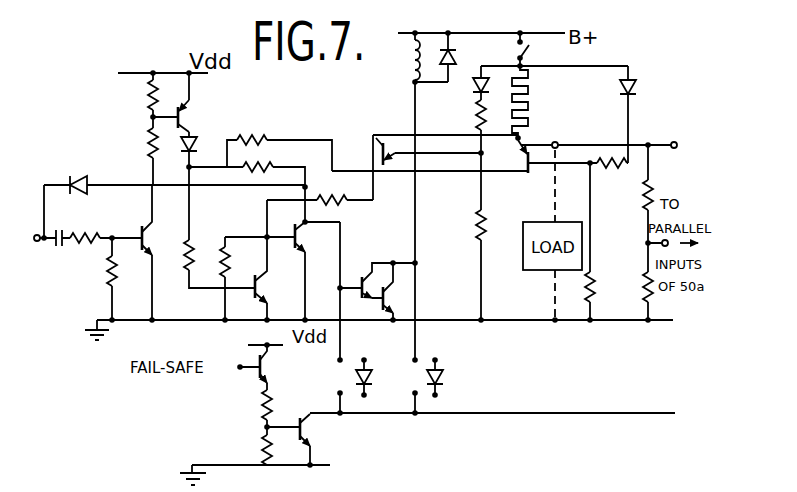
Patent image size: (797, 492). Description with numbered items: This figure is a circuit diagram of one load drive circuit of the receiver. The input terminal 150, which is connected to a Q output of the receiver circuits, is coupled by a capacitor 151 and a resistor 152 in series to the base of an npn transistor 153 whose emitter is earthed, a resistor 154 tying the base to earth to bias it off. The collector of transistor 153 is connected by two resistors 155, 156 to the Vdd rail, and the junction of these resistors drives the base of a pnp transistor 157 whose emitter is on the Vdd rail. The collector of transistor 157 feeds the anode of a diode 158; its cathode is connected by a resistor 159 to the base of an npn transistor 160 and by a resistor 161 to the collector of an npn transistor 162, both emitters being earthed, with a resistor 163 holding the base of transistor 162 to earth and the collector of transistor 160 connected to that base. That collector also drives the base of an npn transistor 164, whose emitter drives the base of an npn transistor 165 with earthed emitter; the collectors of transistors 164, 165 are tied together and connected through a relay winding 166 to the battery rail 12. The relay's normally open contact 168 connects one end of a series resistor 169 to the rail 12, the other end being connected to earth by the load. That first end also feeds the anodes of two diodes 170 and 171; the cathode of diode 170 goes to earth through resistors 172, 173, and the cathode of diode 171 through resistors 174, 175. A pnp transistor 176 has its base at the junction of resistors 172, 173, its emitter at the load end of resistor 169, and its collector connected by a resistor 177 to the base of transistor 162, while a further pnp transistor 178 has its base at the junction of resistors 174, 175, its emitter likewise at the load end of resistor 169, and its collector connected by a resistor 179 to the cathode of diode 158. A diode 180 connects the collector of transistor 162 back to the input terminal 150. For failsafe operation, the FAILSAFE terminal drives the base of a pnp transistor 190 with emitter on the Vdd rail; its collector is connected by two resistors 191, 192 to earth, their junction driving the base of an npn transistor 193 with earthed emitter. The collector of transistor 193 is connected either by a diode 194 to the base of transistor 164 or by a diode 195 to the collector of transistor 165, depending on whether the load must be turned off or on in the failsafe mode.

The battery rail 12 is at (466, 35).
The input terminal 150 is at (38, 244).
The capacitor 151 is at (57, 232).
The resistor 152 is at (84, 232).
The npn transistor 153 is at (148, 232).
The resistor 154 is at (110, 290).
The resistor 155 is at (150, 158).
The resistor 156 is at (150, 97).
The pnp transistor 157 is at (184, 115).
The diode 158 is at (195, 146).
The resistor 159 is at (186, 255).
The npn transistor 160 is at (262, 292).
The resistor 161 is at (262, 171).
The npn transistor 162 is at (300, 241).
The resistor 163 is at (222, 252).
The npn transistor 164 is at (367, 277).
The npn transistor 165 is at (389, 300).
The relay winding 166 is at (408, 55).
The normally open contact 168 is at (526, 55).
The series resistor 169 is at (528, 93).
The diode 170 is at (474, 86).
The diode 171 is at (637, 94).
The resistor 172 is at (475, 116).
The resistor 173 is at (476, 228).
The resistor 174 is at (609, 166).
The resistor 175 is at (596, 279).
The pnp transistor 176 is at (378, 151).
The resistor 177 is at (333, 205).
The pnp transistor 178 is at (524, 172).
The resistor 179 is at (250, 137).
The diode 180 is at (76, 176).
The pnp transistor 190 is at (272, 362).
The resistor 191 is at (258, 406).
The resistor 192 is at (258, 450).
The npn transistor 193 is at (306, 431).
The diode 194 is at (370, 370).
The diode 195 is at (441, 368).